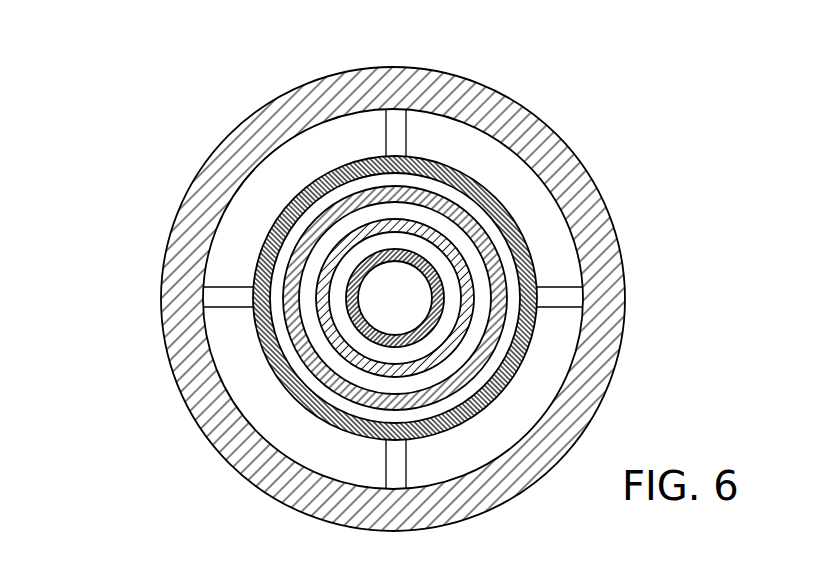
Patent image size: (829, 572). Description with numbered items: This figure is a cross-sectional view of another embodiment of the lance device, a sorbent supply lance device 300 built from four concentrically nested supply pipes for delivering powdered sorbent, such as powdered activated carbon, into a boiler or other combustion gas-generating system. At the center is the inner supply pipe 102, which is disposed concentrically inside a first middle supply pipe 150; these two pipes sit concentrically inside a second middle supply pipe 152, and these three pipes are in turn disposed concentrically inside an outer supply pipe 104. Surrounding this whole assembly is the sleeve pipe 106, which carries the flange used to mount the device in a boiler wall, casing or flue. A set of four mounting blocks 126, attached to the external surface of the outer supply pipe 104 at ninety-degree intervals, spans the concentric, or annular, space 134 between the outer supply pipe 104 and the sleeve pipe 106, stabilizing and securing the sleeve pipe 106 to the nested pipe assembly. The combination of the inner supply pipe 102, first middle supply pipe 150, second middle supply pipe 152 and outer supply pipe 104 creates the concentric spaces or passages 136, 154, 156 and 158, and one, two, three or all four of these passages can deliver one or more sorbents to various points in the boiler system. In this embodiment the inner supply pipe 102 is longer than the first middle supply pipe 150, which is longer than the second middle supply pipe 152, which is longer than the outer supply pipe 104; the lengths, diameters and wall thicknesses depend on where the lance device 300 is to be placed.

The sorbent supply lance device 300 is at (176, 155).
The inner supply pipe 102 is at (482, 180).
The outer supply pipe 104 is at (262, 336).
The sleeve pipe 106 is at (548, 135).
The mounting blocks 126 is at (393, 136).
The annular space 134 is at (498, 166).
The annular space/passage 136 is at (410, 322).
The first middle supply pipe 150 is at (487, 238).
The second middle supply pipe 152 is at (322, 383).
The annular space/passage 154 is at (368, 249).
The annular space/passage 156 is at (465, 343).
The annular space/passage 158 is at (345, 403).